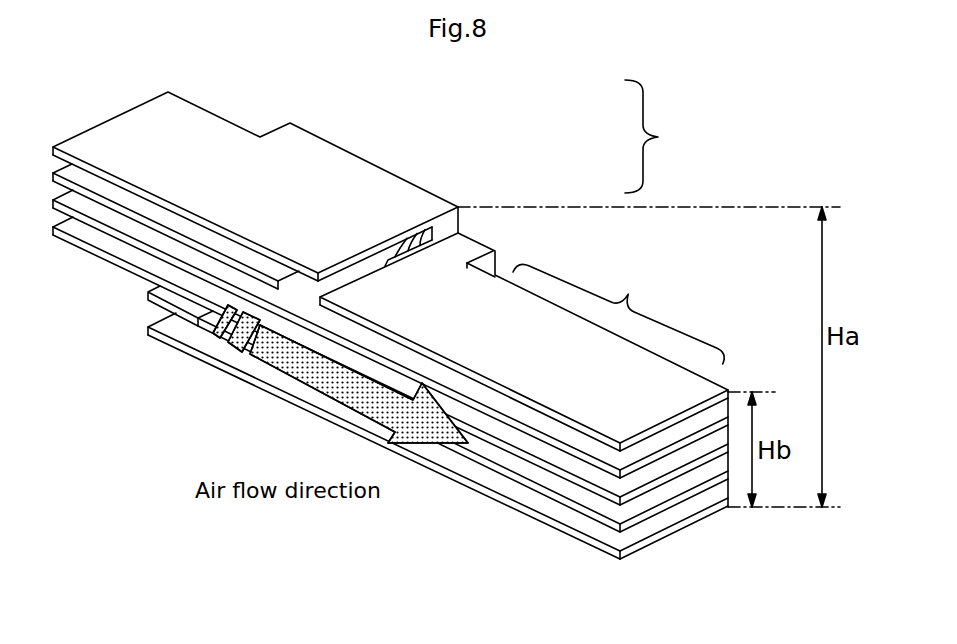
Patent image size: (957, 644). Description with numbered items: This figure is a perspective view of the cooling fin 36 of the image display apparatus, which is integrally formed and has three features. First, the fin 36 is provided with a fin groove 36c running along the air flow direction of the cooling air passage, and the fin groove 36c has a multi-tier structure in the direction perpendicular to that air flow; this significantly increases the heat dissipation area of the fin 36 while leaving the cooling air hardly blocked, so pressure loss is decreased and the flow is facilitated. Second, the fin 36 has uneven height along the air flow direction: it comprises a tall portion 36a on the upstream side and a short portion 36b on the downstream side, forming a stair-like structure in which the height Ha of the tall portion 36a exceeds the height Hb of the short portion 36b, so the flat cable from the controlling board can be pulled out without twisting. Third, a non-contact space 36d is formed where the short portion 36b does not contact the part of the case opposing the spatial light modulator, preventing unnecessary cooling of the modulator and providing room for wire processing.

The fin 36 is at (390, 265).
The tall portion 36a is at (368, 190).
The short portion 36b is at (481, 290).
The fin groove 36c is at (633, 447).
The non-contact space 36d is at (623, 306).